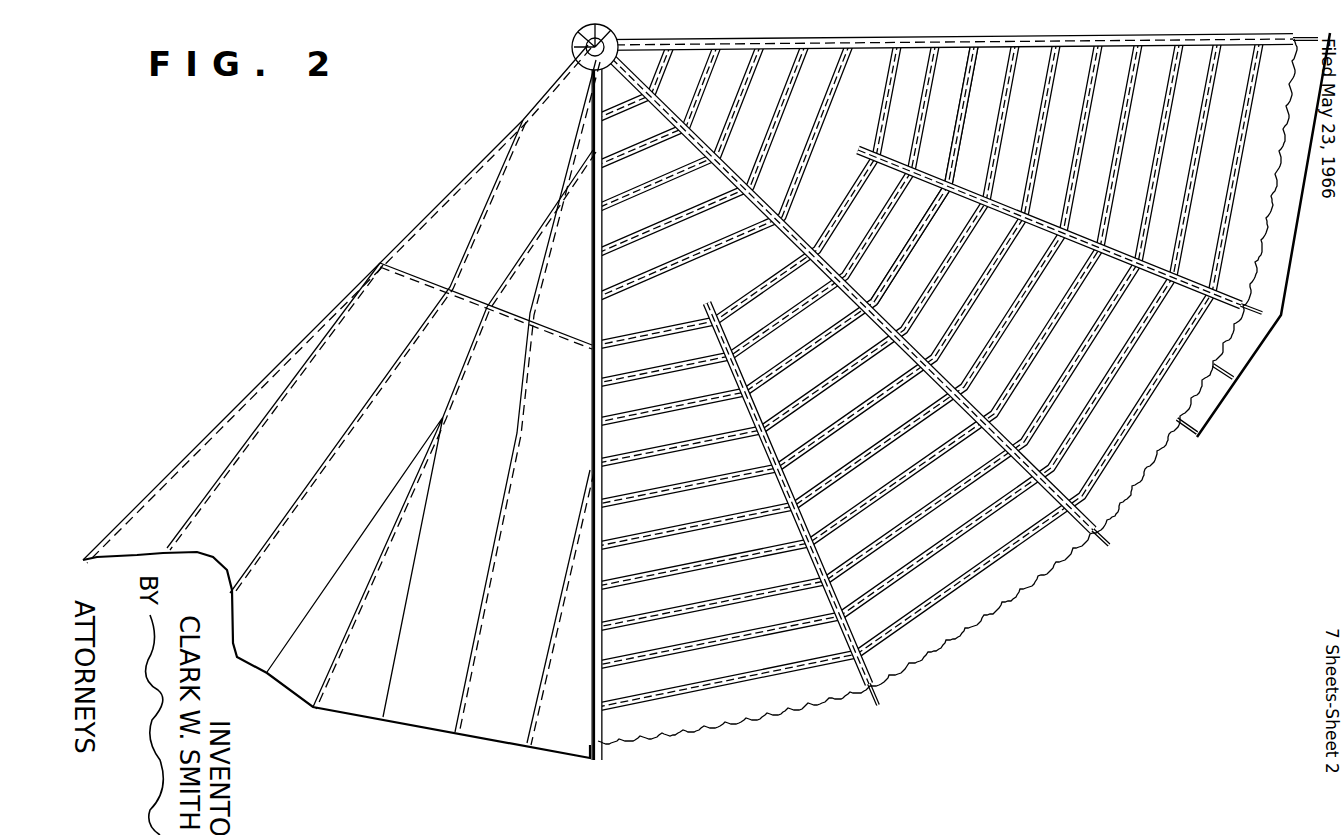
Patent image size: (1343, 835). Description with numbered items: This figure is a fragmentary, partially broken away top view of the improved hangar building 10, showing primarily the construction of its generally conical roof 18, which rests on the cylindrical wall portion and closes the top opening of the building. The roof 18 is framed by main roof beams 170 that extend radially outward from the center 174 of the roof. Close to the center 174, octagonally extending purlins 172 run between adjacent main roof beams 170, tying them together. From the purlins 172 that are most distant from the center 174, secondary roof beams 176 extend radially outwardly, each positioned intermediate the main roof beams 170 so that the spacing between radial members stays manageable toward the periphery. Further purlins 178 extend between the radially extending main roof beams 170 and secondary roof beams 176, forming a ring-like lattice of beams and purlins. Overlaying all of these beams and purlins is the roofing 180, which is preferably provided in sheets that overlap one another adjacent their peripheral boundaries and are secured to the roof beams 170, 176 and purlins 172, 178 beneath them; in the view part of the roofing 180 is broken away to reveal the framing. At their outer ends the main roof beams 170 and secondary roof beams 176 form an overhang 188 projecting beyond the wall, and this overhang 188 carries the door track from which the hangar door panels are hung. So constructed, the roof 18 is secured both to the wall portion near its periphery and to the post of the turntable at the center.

The building 10 is at (344, 708).
The roof portion 18 is at (504, 699).
The main roof beams 170 is at (1120, 40).
The purlins 172 is at (736, 97).
The center 174 is at (608, 42).
The secondary roof beams 176 is at (1104, 241).
The purlins 178 is at (1000, 107).
The roofing 180 is at (428, 305).
The overhang 188 is at (1312, 31).